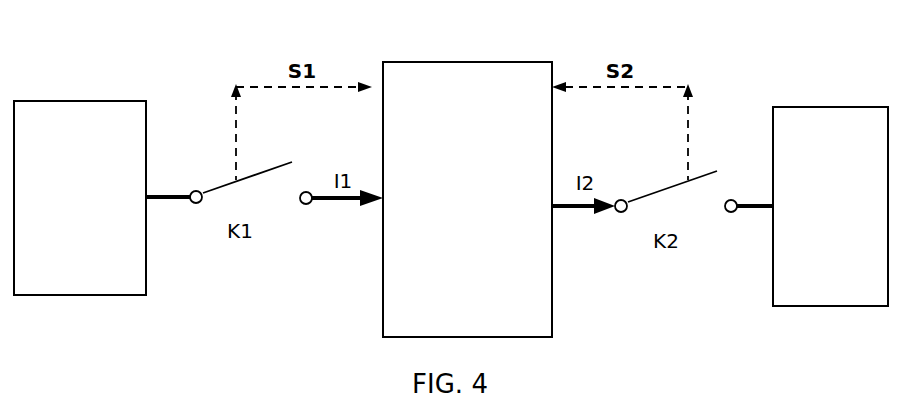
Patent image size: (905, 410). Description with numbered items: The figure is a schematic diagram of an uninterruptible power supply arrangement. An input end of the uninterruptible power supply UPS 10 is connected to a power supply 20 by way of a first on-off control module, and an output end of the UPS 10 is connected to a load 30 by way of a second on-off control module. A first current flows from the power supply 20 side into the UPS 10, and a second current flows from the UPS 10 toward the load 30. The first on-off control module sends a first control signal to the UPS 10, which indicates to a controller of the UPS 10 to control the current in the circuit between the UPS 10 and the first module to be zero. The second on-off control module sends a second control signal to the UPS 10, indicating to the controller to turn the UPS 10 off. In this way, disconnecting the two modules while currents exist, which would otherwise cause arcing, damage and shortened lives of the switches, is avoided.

The uninterruptible power supply 10 is at (464, 80).
The power supply 20 is at (78, 117).
The load 30 is at (832, 118).